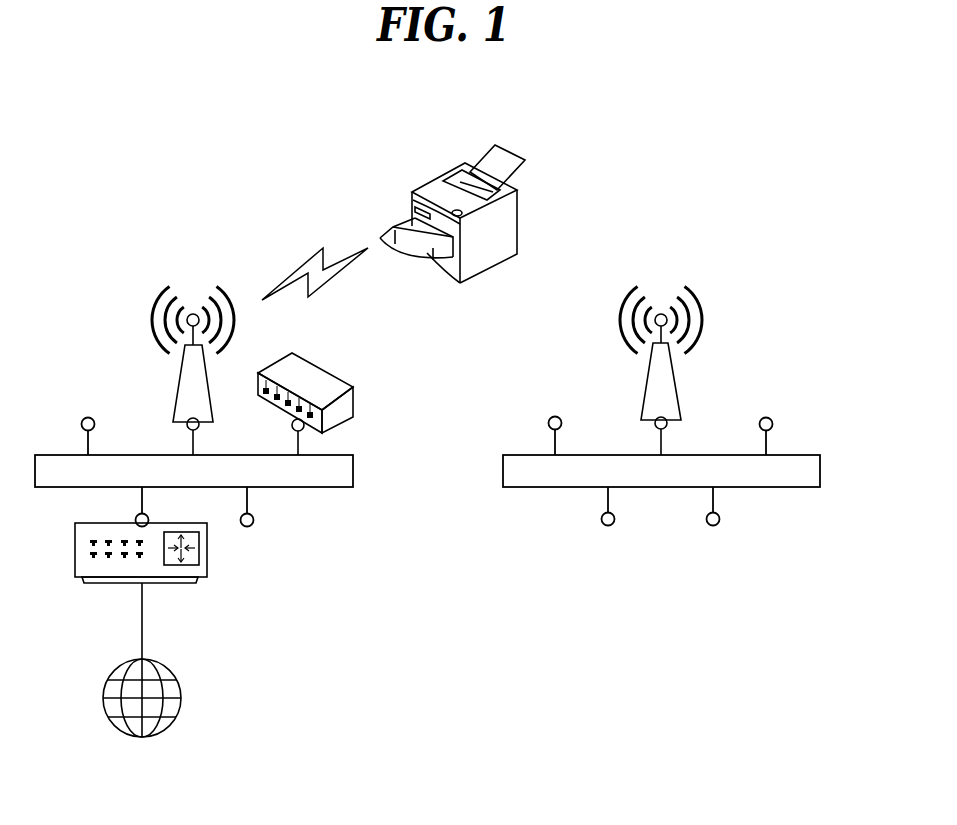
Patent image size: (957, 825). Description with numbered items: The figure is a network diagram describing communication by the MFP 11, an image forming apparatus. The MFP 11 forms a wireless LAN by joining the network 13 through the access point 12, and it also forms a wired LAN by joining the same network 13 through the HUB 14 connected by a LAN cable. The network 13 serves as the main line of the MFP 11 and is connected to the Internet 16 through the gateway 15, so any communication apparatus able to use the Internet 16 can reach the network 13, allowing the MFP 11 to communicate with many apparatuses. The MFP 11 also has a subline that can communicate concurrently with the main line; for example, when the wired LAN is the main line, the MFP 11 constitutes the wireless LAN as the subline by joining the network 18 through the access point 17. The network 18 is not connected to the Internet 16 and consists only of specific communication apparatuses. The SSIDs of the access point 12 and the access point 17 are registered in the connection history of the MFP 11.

The MFP 11 is at (428, 183).
The access point 12 is at (178, 390).
The network 13 is at (353, 473).
The HUB 14 is at (327, 373).
The gateway 15 is at (207, 550).
The Internet 16 is at (181, 695).
The access point 17 is at (645, 387).
The network 18 is at (820, 473).